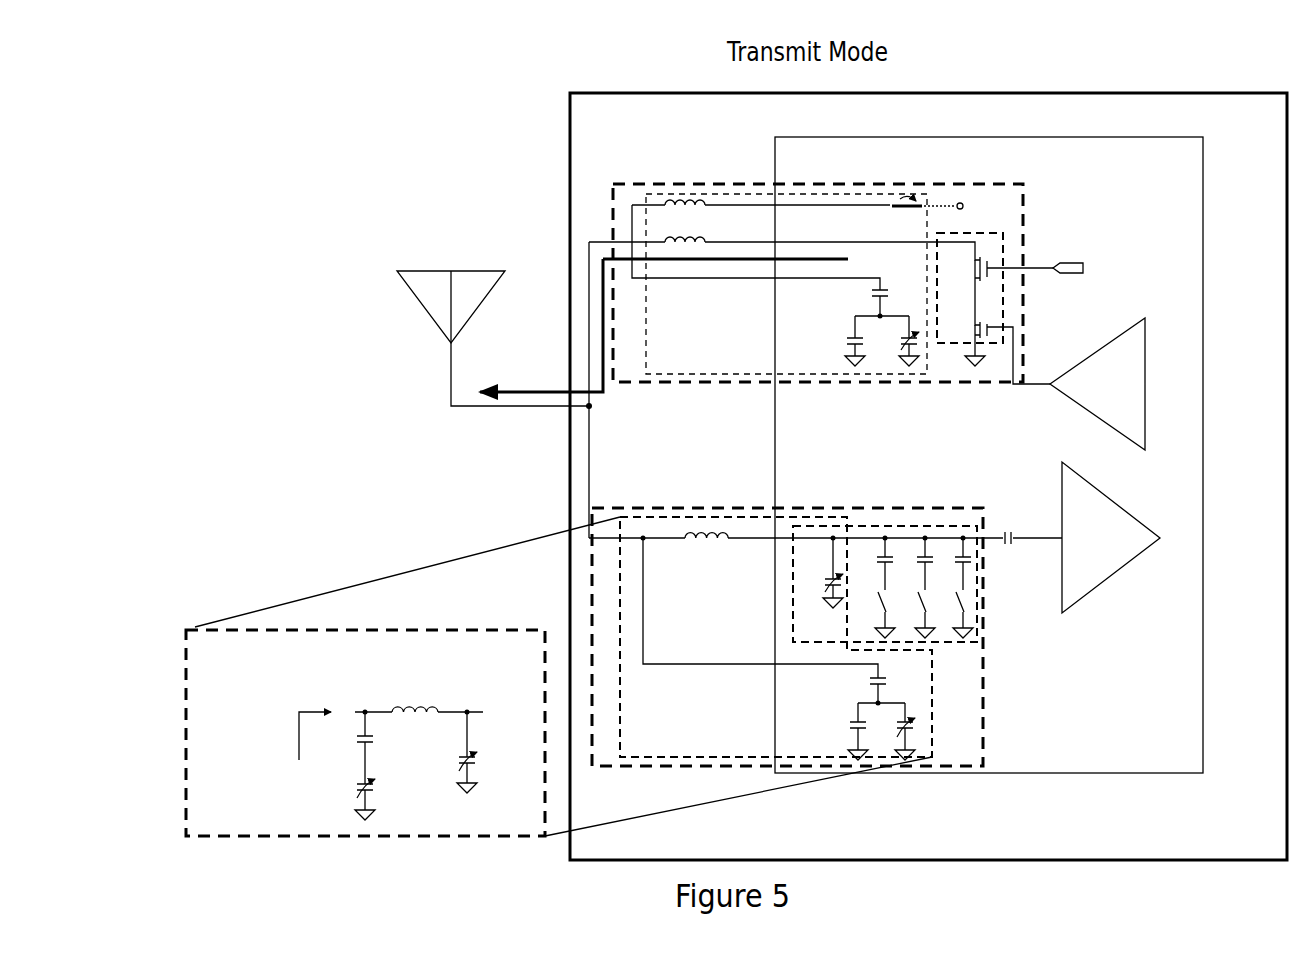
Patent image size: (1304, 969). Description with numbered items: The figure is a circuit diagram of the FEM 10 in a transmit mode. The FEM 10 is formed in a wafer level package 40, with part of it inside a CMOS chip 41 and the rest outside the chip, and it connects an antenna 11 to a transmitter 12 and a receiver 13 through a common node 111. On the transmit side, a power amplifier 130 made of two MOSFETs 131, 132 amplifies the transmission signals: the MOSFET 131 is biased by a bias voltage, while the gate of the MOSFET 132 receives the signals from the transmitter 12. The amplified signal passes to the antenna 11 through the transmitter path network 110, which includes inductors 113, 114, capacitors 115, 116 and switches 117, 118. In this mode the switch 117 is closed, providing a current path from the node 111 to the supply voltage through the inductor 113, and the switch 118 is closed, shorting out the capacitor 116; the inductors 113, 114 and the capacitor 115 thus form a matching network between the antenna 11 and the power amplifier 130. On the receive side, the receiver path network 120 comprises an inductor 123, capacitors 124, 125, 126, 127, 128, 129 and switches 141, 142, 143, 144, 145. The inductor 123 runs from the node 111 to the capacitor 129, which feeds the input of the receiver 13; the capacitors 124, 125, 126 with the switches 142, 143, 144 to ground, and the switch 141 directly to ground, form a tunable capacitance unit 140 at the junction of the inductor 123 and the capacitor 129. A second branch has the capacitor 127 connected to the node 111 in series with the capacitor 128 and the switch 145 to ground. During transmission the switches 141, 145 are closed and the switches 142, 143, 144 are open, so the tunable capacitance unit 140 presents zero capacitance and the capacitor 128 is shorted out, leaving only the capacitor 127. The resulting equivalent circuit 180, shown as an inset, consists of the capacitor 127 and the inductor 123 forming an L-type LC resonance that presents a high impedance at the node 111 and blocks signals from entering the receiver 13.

The FEM 10 is at (342, 117).
The antenna 11 is at (493, 324).
The transmitter 12 is at (1097, 384).
The receiver 13 is at (1111, 537).
The wafer level package 40 is at (1180, 84).
The CMOS chip 41 is at (1003, 132).
The transmitter path network 110 is at (742, 185).
The node 111 is at (595, 408).
The inductor 113 is at (761, 217).
The inductor 114 is at (782, 249).
The capacitor 115 is at (760, 260).
The capacitor 116 is at (833, 341).
The switch 117 is at (951, 214).
The switch 118 is at (892, 341).
The receiver path network 120 is at (730, 505).
The inductor 123 is at (679, 622).
The capacitor 124 is at (870, 562).
The capacitor 125 is at (939, 562).
The capacitor 126 is at (988, 563).
The capacitor 127 is at (621, 661).
The capacitor 128 is at (839, 731).
The capacitor 129 is at (1031, 526).
The power amplifier 130 is at (1003, 233).
The MOSFET 131 is at (1045, 268).
The MOSFET 132 is at (995, 331).
The tunable capacitance unit 140 is at (875, 530).
The switch 141 is at (650, 665).
The switch 142 is at (871, 604).
The switch 143 is at (938, 604).
The switch 144 is at (987, 611).
The switch 145 is at (635, 761).
The equivalent circuit 180 is at (238, 619).